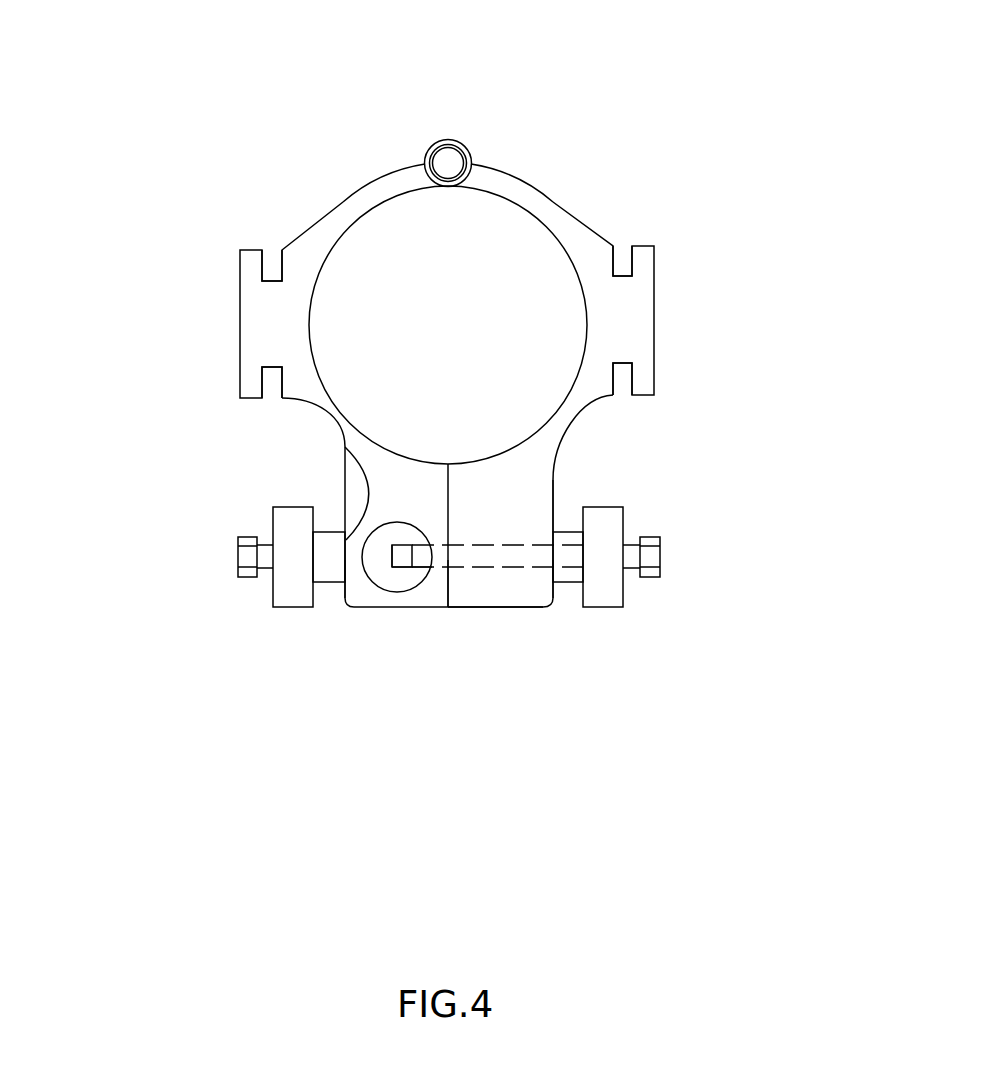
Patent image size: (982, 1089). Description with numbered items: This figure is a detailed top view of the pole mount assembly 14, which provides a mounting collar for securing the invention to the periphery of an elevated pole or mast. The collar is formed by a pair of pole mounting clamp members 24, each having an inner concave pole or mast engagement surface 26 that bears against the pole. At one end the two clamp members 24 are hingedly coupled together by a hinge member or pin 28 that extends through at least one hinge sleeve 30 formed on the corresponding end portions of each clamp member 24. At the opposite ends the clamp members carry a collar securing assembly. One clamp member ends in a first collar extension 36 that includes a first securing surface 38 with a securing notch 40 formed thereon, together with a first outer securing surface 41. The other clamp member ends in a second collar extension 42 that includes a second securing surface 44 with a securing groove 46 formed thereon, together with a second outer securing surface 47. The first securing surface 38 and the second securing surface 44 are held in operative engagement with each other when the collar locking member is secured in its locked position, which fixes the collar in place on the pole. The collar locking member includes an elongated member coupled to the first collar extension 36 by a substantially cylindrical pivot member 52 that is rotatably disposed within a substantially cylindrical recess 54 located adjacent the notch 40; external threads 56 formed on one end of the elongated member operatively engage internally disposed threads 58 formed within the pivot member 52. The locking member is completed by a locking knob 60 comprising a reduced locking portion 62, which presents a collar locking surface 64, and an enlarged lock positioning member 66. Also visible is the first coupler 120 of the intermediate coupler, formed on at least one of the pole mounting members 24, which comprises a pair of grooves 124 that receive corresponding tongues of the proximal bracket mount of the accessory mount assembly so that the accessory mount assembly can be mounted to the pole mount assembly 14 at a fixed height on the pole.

The pole mount assembly 14 is at (452, 768).
The pole mounting clamp member 24 is at (342, 200).
The inner concave pole or mast engagement surface 26 is at (310, 310).
The hinge member or pin 28 is at (448, 162).
The hinge sleeve 30 is at (428, 153).
The first collar extension 36 is at (368, 600).
The first securing surface 38 is at (443, 587).
The securing notch 40 is at (435, 574).
The first outer securing surface 41 is at (342, 446).
The second collar extension 42 is at (450, 590).
The second securing surface 44 is at (480, 610).
The securing groove 46 is at (507, 543).
The second outer securing surface 47 is at (556, 515).
The substantially cylindrical pivot member 52 is at (397, 533).
The substantially cylindrical recess 54 is at (383, 520).
The external threads 56 is at (397, 572).
The internally disposed threads 58 is at (412, 538).
The locking knob 60 is at (238, 640).
The reduced locking portion 62 is at (332, 528).
The collar locking surface 64 is at (347, 566).
The enlarged lock positioning member 66 is at (278, 530).
The first coupler 120 is at (195, 330).
The groove 124 is at (270, 255).